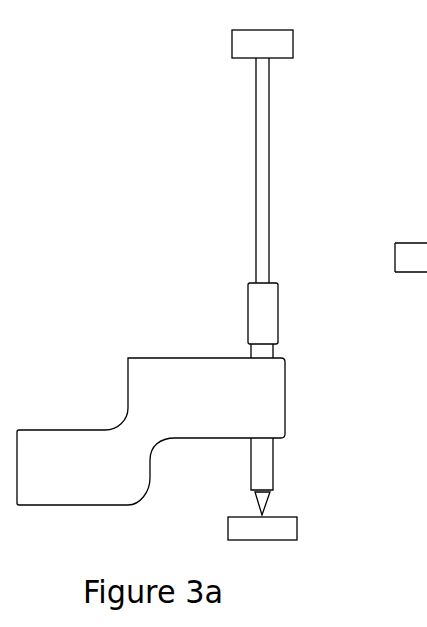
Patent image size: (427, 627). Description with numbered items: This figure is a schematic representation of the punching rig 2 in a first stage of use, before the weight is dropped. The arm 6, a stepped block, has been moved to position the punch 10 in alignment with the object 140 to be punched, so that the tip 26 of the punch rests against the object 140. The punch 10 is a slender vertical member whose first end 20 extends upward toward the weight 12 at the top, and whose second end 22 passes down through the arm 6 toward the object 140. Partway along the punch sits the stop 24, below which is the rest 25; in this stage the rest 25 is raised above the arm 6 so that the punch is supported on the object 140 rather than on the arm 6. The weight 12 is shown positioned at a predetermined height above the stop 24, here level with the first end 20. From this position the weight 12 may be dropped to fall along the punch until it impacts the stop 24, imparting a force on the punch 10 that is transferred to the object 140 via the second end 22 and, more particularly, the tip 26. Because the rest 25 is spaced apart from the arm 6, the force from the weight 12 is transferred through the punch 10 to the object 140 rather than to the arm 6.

The system 2 is at (132, 135).
The punch 10 is at (223, 296).
The weight 12 is at (275, 51).
The first end 20 is at (268, 62).
The stop 24 is at (272, 284).
The rest 25 is at (263, 343).
The arm 6 is at (140, 398).
The second end 22 is at (260, 492).
The tip 26 is at (264, 503).
The object 140 is at (270, 527).